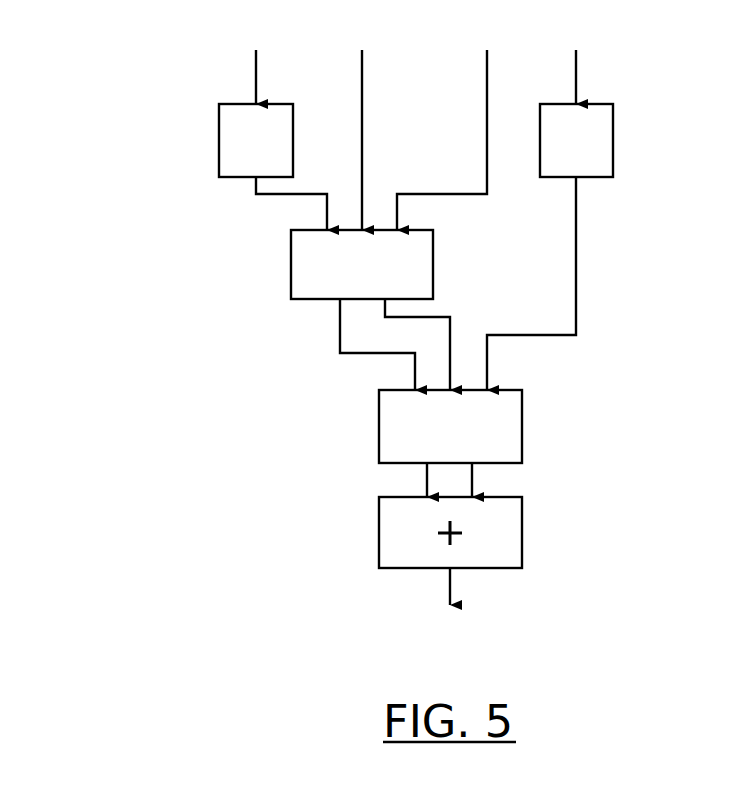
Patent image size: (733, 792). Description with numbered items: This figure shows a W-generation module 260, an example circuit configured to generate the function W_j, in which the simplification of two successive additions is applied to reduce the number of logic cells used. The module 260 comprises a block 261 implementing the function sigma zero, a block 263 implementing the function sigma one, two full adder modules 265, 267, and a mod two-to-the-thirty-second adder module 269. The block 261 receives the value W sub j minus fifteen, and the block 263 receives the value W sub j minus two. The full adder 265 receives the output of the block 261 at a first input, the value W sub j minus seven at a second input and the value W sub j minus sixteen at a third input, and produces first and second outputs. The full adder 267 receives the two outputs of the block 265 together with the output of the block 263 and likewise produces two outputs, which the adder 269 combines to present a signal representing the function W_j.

The W-generation module 260 is at (106, 68).
The block implementing the function sigma 0 261 is at (228, 104).
The block implementing the function sigma 1 263 is at (603, 104).
The full adder module 265 is at (291, 265).
The full adder module 267 is at (379, 425).
The mod 2^32 adder module 269 is at (379, 535).